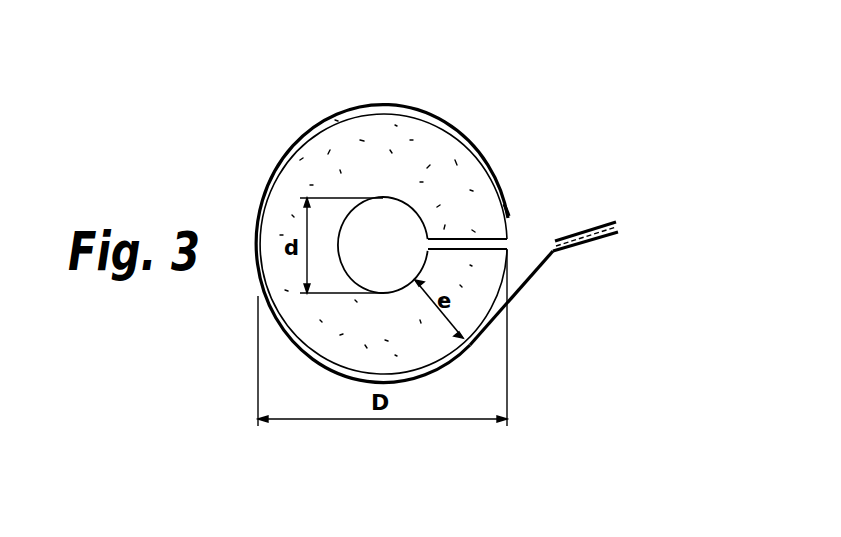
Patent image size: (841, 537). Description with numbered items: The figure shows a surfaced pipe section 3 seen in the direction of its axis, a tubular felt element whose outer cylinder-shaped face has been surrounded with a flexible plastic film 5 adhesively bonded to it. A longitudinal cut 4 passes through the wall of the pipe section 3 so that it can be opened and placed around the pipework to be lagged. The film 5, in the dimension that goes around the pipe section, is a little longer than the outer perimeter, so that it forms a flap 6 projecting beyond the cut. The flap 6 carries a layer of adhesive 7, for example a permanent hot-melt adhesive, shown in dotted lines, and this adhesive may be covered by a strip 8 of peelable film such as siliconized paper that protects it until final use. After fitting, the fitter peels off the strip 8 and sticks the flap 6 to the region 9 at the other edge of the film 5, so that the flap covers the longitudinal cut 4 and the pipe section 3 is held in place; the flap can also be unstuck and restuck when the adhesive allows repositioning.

The pipe section 3 is at (453, 172).
The longitudinal cut 4 is at (500, 240).
The flexible plastic film 5 is at (309, 132).
The flap 6 is at (603, 236).
The layer of adhesive 7 is at (612, 226).
The strip of peelable film 8 is at (566, 256).
The region 9 is at (508, 212).